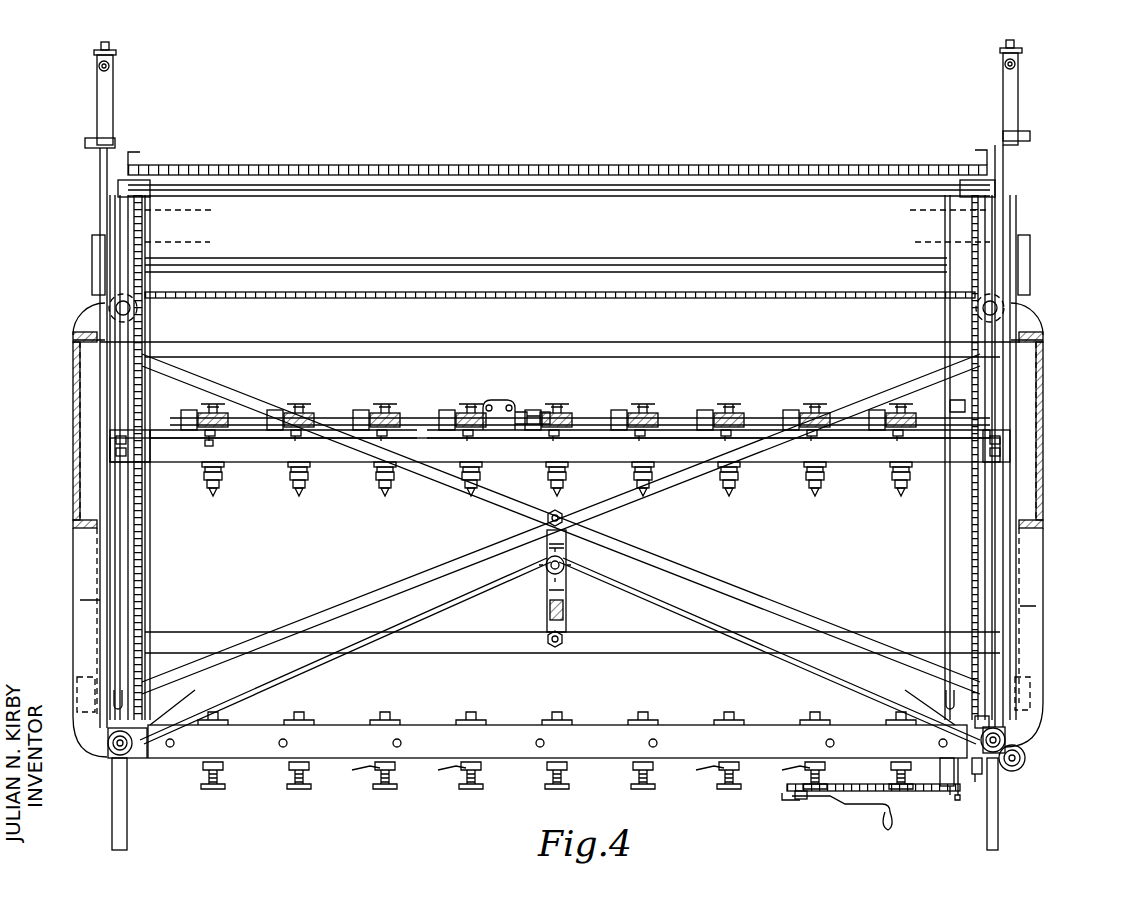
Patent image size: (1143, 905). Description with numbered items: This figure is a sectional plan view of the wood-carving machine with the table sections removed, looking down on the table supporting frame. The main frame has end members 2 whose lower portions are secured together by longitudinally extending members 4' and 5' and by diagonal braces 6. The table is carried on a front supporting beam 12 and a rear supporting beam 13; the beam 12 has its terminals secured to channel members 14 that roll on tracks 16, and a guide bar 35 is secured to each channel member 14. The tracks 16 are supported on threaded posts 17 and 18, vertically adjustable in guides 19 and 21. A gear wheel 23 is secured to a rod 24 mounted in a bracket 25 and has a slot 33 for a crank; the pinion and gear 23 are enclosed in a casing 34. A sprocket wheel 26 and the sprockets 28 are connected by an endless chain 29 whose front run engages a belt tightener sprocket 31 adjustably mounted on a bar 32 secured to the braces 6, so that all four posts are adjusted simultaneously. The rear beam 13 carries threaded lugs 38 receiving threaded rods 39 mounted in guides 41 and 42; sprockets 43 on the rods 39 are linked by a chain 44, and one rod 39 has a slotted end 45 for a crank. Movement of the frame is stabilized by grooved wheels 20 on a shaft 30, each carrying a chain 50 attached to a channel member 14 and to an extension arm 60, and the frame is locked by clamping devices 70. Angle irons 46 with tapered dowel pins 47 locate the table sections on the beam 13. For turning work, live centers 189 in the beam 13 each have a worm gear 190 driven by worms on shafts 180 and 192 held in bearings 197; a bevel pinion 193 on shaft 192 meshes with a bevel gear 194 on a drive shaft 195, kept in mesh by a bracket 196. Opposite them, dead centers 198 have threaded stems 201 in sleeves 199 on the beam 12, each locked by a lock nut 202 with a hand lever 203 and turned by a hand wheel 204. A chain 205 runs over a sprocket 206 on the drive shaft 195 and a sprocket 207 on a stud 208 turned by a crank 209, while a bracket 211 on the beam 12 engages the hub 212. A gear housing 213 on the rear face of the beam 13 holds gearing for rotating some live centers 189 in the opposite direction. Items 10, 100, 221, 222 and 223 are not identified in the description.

The end member 2 is at (73, 562).
The longitudinally extending member 4' is at (560, 333).
The longitudinally extending member 5' is at (572, 659).
The diagonal brace 6 is at (263, 404).
The pin 10 is at (100, 608).
The front supporting beam 12 is at (268, 760).
The rear supporting beam 13 is at (210, 242).
The channel member 14 is at (1043, 502).
The track 16 is at (998, 174).
The post 17 is at (112, 750).
The post 18 is at (108, 312).
The guide 19 is at (96, 734).
The grooved wheel 20 is at (92, 272).
The guide 21 is at (73, 340).
The gear wheel 23 is at (1025, 758).
The rod 24 is at (1020, 762).
The bracket 25 is at (1030, 735).
The sprocket wheel 26 is at (125, 767).
The sprocket 28 is at (110, 300).
The endless chain 29 is at (715, 298).
The shaft 30 is at (695, 262).
The belt tightener sprocket 31 is at (565, 577).
The bar 32 is at (547, 600).
The slot 33 is at (1022, 770).
The casing 34 is at (1022, 750).
The guide bar 35 is at (985, 204).
The threaded lug 38 is at (115, 442).
The threaded rod 39 is at (143, 614).
The guide 41 is at (170, 725).
The guide 42 is at (150, 185).
The sprocket 43 is at (142, 165).
The chain 44 is at (720, 166).
The slotted end 45 is at (978, 777).
The angle iron 46 is at (400, 430).
The tapered dowel pin 47 is at (205, 442).
The chain 50 is at (97, 216).
The extension arm 60 is at (115, 90).
The clamping device 70 is at (88, 680).
The clamp 100 is at (300, 412).
The shaft 180 is at (235, 414).
The live center 189 is at (222, 500).
The worm gear 190 is at (370, 418).
The shaft 192 is at (790, 412).
The bevel pinion 193 is at (938, 410).
The bevel gear 194 is at (945, 406).
The drive shaft 195 is at (955, 618).
The bracket 196 is at (960, 408).
The bearing 197 is at (185, 420).
The dead center 198 is at (305, 718).
The sleeve 199 is at (390, 718).
The threaded stem 201 is at (204, 777).
The lock nut 202 is at (378, 774).
The hand lever 203 is at (470, 778).
The hand wheel 204 is at (215, 790).
The chain 205 is at (850, 792).
The sprocket 206 is at (958, 801).
The sprocket 207 is at (787, 797).
The stud 208 is at (800, 800).
The crank 209 is at (865, 806).
The bracket 211 is at (940, 772).
The hub 212 is at (950, 792).
The gear housing 213 is at (500, 400).
The link 221 is at (524, 412).
The link 222 is at (528, 418).
The block 223 is at (552, 418).